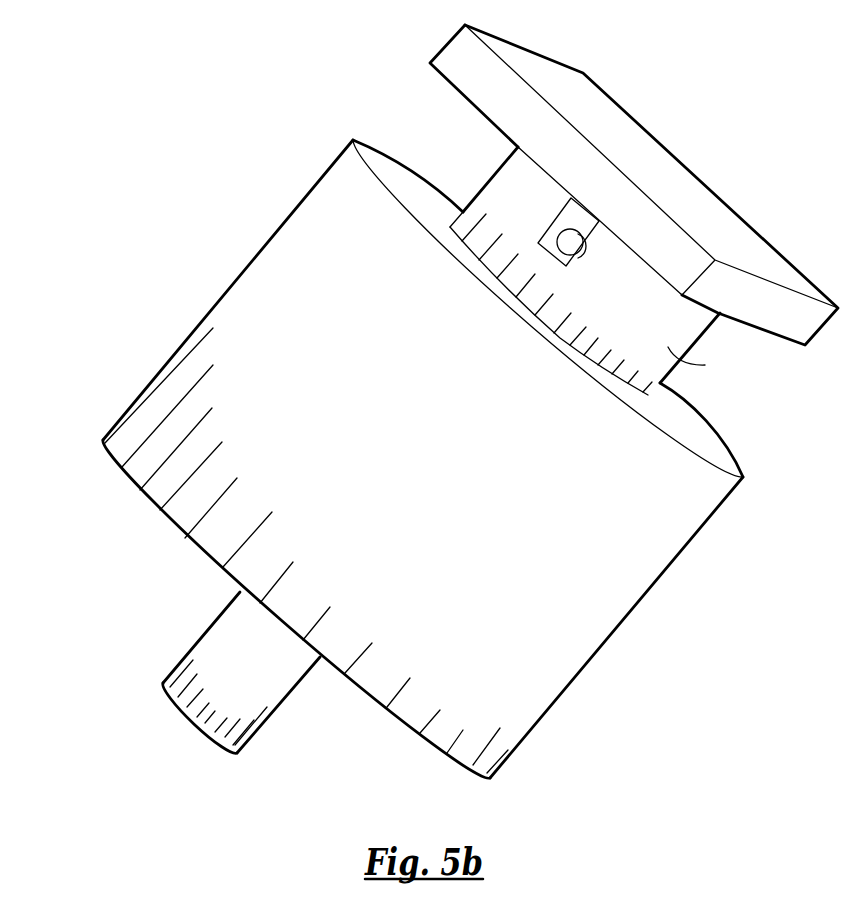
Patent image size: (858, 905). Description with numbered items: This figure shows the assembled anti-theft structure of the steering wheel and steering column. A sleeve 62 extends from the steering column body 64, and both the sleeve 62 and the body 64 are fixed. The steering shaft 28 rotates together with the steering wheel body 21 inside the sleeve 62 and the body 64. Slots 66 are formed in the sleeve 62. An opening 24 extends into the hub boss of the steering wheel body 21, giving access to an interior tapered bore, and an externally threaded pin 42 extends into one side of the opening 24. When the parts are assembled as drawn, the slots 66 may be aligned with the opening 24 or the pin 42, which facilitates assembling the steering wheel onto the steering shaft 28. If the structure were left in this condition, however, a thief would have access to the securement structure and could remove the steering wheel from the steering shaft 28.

The body 21 is at (480, 89).
The opening 24 is at (577, 228).
The steering shaft 28 is at (222, 637).
The pin 42 is at (582, 236).
The sleeve 62 is at (670, 350).
The steering column body 64 is at (634, 582).
The slots 66 is at (545, 232).